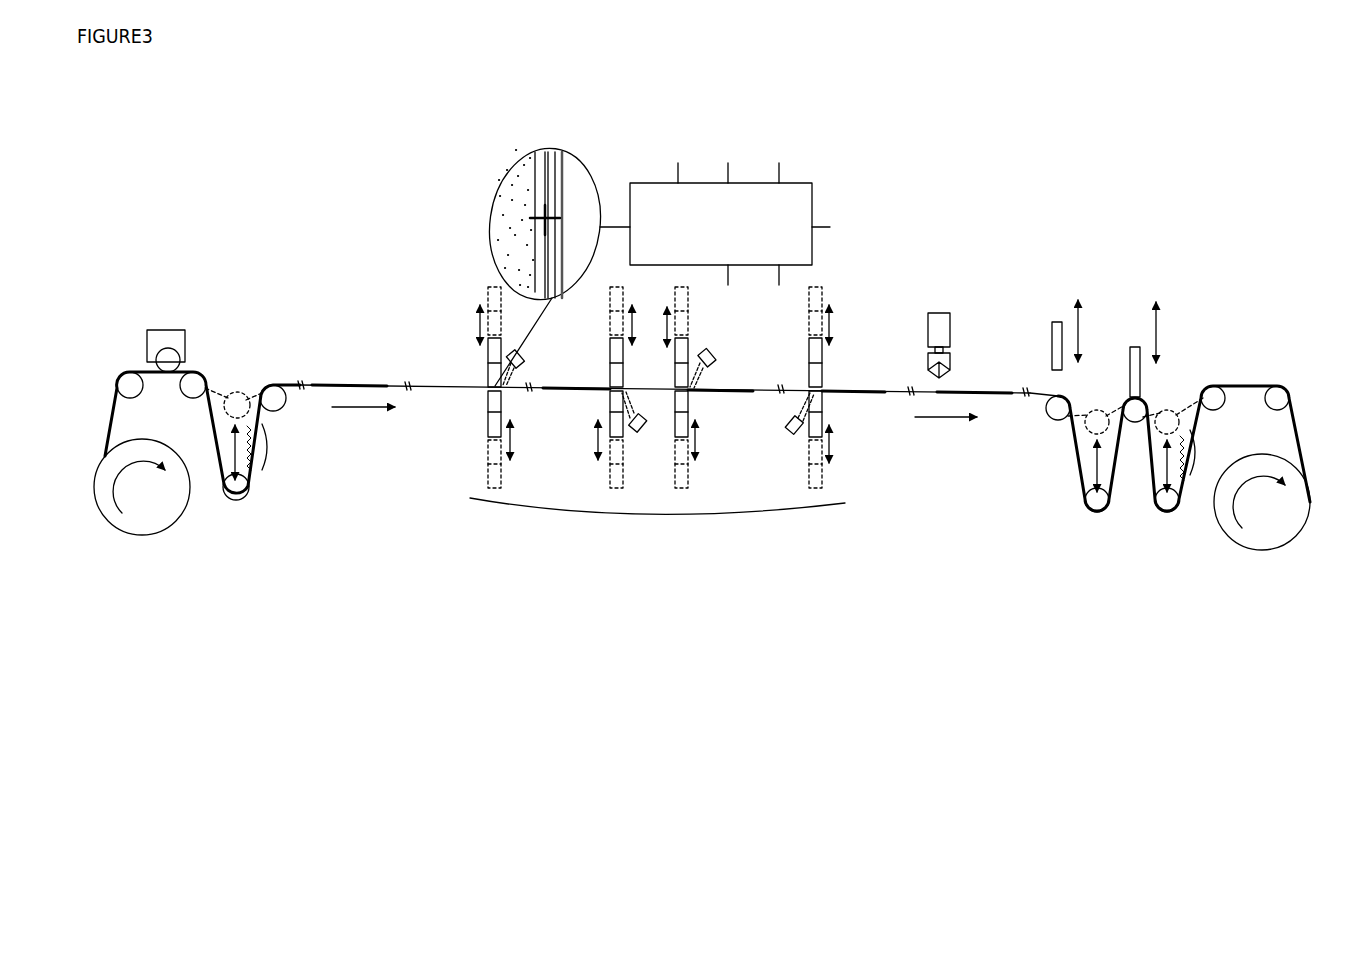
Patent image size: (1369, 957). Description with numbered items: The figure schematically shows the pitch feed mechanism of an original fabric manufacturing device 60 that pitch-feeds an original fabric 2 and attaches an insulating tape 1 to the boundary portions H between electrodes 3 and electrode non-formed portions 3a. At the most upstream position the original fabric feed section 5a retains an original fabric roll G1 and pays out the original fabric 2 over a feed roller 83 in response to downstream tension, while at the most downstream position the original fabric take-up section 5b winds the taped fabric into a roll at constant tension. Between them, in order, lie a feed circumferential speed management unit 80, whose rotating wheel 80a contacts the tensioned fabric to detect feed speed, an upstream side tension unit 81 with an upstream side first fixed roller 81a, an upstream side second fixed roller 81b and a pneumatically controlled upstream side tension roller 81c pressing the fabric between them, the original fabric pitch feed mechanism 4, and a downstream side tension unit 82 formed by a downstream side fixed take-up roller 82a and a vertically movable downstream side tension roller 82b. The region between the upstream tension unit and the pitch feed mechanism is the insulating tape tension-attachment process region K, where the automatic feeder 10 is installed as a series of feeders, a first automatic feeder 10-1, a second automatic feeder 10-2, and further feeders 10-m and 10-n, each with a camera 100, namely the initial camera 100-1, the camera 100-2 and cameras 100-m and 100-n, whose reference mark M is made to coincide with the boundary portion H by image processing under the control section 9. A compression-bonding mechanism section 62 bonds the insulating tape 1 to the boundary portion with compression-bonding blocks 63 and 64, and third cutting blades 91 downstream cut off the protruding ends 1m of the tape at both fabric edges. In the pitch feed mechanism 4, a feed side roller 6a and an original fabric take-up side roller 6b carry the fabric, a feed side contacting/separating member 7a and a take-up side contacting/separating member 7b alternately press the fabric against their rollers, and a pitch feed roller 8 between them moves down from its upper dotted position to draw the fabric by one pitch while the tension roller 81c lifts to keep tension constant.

The insulating tape 1 is at (704, 267).
The protruding ends 1m is at (920, 437).
The original fabric 2 is at (372, 375).
The electrodes 3 is at (516, 210).
The electrode non-formed portions 3a is at (429, 386).
The original fabric pitch feed mechanism 4 is at (1085, 491).
The original fabric feed section 5a is at (114, 493).
The original fabric take-up section 5b is at (1325, 493).
The feed side roller 6a is at (1053, 412).
The original fabric take-up side roller 6b is at (1127, 405).
The feed side contacting/separating member 7a is at (1052, 362).
The take-up side contacting/separating member 7b is at (1131, 367).
The pitch feed roller 8 is at (1088, 506).
The control section 9 is at (715, 224).
The automatic feeder 10 is at (658, 391).
The first automatic feeder 10-1 is at (479, 389).
The second automatic feeder 10-2 is at (599, 390).
The m-th automatic feeder 10-m is at (707, 391).
The n-th automatic feeder 10-n is at (839, 391).
The original fabric manufacturing device 60 is at (952, 301).
The compression-bonding mechanism section 62 is at (620, 379).
The compression-bonding block 63 is at (492, 368).
The compression-bonding block 64 is at (492, 404).
The feed circumferential speed management unit 80 is at (160, 332).
The rotating wheel 80a is at (160, 355).
The upstream side tension unit 81 is at (265, 429).
The upstream side first fixed roller 81a is at (200, 378).
The upstream side second fixed roller 81b is at (278, 390).
The upstream side tension roller 81c is at (236, 500).
The downstream side tension unit 82 is at (1211, 420).
The downstream side fixed take-up roller 82a is at (1211, 388).
The downstream side tension roller 82b is at (1165, 511).
The feed roller 83 is at (128, 378).
The third cutting blades 91 is at (950, 362).
The camera 100 is at (662, 387).
The initial camera 100-1 is at (524, 352).
The camera of second automatic feeder 100-2 is at (658, 422).
The m-th camera 100-m is at (738, 358).
The n-th camera 100-n is at (787, 424).
The original fabric roll G1 is at (113, 519).
The boundary portions H is at (533, 190).
The insulating tape tension-attachment process region K is at (889, 398).
The reference mark M is at (558, 206).